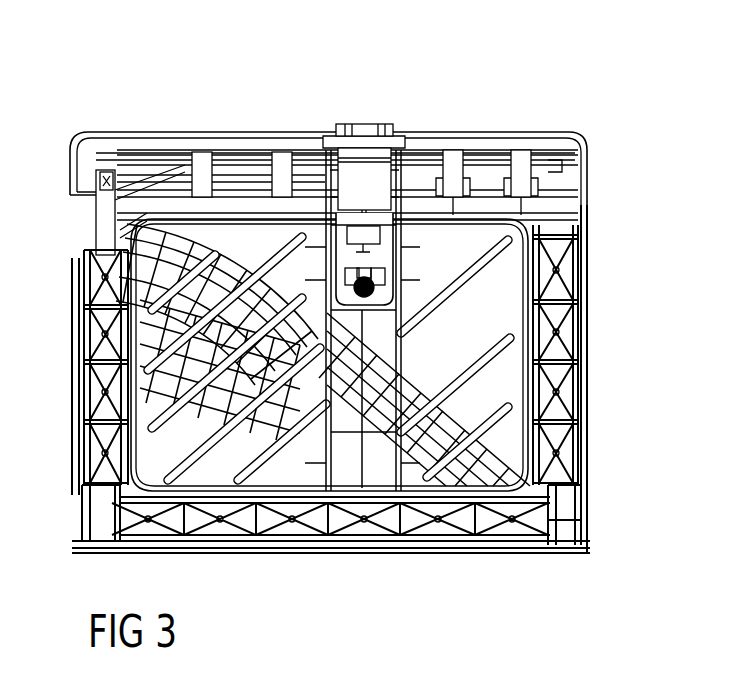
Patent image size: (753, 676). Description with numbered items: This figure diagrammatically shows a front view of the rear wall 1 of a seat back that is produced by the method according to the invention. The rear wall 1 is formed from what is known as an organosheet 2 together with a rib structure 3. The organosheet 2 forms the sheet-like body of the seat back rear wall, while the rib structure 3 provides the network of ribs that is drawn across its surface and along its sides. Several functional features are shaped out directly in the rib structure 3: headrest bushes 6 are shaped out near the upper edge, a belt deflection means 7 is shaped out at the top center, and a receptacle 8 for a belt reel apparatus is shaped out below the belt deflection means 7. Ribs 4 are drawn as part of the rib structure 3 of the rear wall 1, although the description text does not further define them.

The rear wall 1 is at (91, 97).
The organosheet 2 is at (568, 197).
The rib structure 3 is at (583, 383).
The support rib 4 is at (500, 345).
The headrest bushes 6 is at (452, 163).
The belt deflection means 7 is at (358, 140).
The receptacle 8 is at (383, 265).